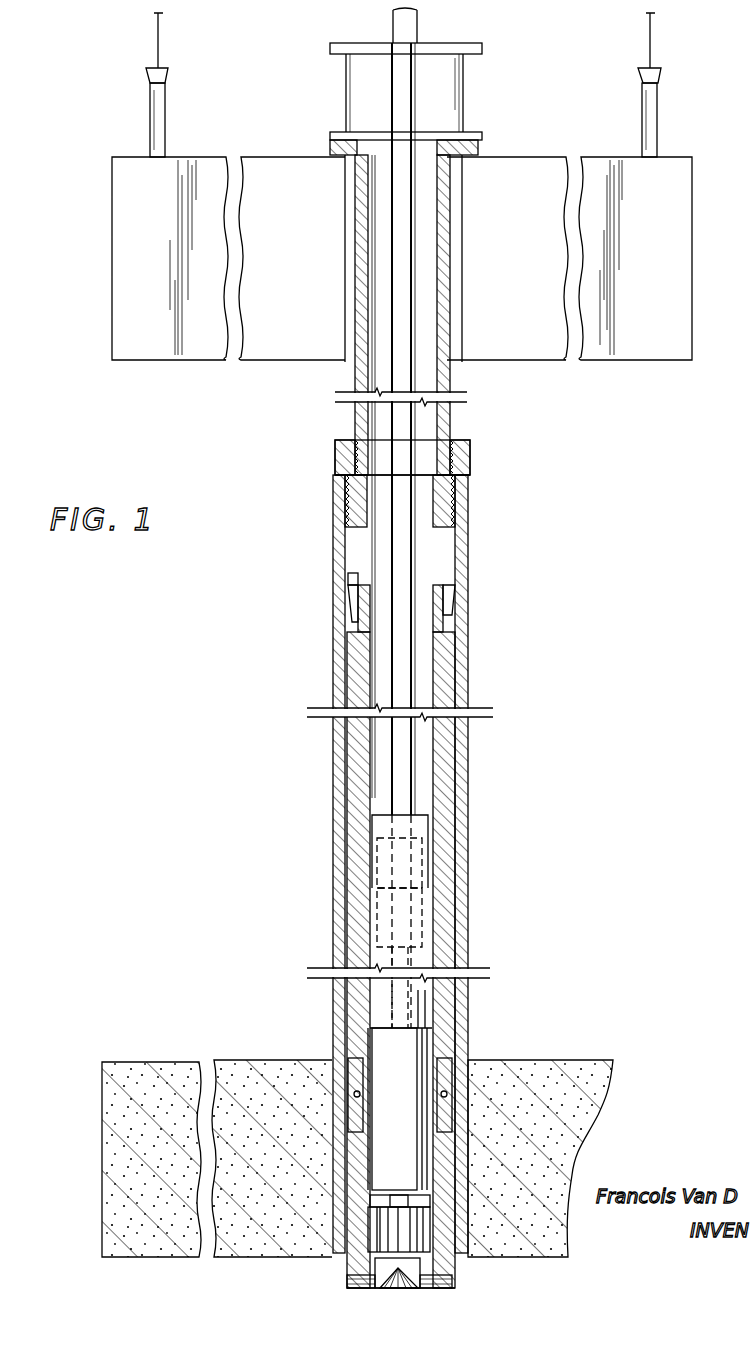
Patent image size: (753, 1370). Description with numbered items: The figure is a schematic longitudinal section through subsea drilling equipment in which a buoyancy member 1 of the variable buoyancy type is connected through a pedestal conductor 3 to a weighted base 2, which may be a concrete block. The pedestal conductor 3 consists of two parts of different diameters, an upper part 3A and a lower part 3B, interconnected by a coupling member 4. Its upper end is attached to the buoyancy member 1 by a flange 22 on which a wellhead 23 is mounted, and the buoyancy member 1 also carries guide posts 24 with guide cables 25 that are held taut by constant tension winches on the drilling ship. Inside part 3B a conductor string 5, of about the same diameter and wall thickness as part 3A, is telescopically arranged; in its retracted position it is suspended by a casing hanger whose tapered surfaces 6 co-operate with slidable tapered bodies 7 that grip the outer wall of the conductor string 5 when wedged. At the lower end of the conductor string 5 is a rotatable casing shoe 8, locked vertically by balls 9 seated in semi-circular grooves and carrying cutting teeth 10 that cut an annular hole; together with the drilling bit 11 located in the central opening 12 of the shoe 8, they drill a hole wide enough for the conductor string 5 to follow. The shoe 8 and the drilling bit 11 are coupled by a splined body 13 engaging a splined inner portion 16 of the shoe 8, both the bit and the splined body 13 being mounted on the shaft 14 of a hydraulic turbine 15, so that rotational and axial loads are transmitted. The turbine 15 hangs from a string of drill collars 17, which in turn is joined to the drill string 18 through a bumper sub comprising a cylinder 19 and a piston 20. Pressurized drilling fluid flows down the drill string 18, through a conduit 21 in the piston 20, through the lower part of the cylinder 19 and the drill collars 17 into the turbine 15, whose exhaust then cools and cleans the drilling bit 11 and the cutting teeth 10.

The buoyancy member 1 is at (693, 248).
The weighted base 2 is at (575, 1060).
The pedestal conductor 3 is at (505, 456).
The part of pedestal conductor 3A is at (450, 426).
The part of pedestal conductor 3B is at (470, 500).
The coupling member 4 is at (335, 458).
The conductor string 5 is at (445, 690).
The tapered surfaces 6 is at (348, 605).
The tapered bodies 7 is at (352, 578).
The casing shoe 8 is at (330, 1185).
The balls 9 is at (354, 1094).
The cutting teeth 10 is at (440, 1283).
The drilling bit 11 is at (398, 1290).
The central opening 12 is at (377, 1263).
The splined body 13 is at (413, 1233).
The shaft 14 is at (430, 1200).
The hydraulic turbine 15 is at (417, 1157).
The splined inner portion 16 is at (367, 1230).
The string of drill collars 17 is at (418, 1013).
The drill string 18 is at (418, 26).
The cylinder 19 is at (425, 933).
The piston 20 is at (415, 885).
The conduit 21 is at (395, 880).
The flange 22 is at (480, 143).
The wellhead 23 is at (453, 98).
The guide posts 24 is at (657, 115).
The guide cables 25 is at (652, 40).